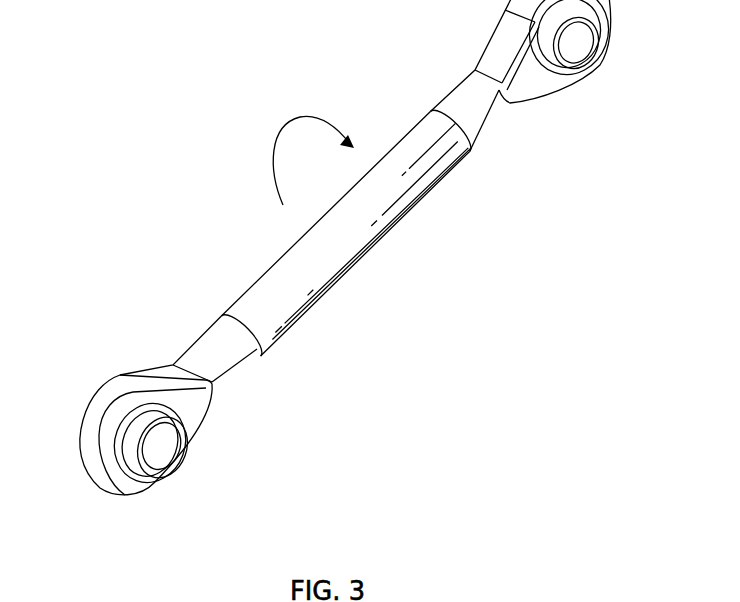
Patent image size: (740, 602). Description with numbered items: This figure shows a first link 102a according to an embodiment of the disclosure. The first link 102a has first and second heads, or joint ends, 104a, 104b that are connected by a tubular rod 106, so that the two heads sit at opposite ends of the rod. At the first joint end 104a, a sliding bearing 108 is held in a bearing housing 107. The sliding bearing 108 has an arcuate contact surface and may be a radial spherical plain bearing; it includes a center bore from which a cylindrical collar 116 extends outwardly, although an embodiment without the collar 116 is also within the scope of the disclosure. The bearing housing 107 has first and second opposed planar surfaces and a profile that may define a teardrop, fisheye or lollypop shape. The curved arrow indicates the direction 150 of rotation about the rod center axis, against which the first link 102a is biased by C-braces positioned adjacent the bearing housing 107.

The first link 102a is at (406, 283).
The first head 104a is at (150, 461).
The second head 104b is at (603, 77).
The tubular rod 106 is at (297, 258).
The bearing housing 107 is at (113, 392).
The sliding bearing 108 is at (168, 503).
The cylindrical collar 116 is at (143, 492).
The direction 150 is at (278, 127).